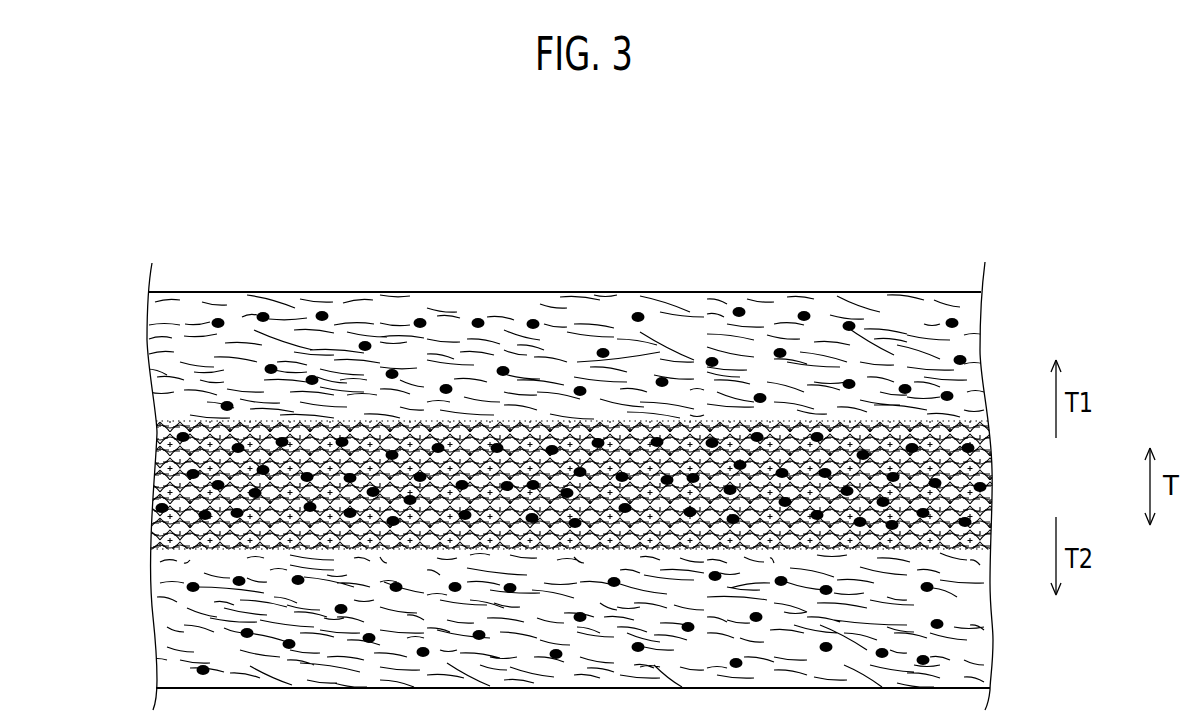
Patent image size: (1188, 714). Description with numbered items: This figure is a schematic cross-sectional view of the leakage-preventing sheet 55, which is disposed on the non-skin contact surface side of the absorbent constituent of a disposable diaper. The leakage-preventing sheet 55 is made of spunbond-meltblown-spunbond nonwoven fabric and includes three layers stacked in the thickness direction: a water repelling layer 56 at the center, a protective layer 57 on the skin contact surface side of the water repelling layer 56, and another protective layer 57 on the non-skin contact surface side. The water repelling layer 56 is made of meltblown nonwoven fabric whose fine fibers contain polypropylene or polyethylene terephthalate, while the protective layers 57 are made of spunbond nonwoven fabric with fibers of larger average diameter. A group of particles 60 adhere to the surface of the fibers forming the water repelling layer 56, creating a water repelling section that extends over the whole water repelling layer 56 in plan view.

The leakage-preventing sheet 55 is at (881, 258).
The water repelling layer 56 is at (122, 422).
The protective layer 57 is at (122, 294).
The group of particles 60 is at (552, 445).